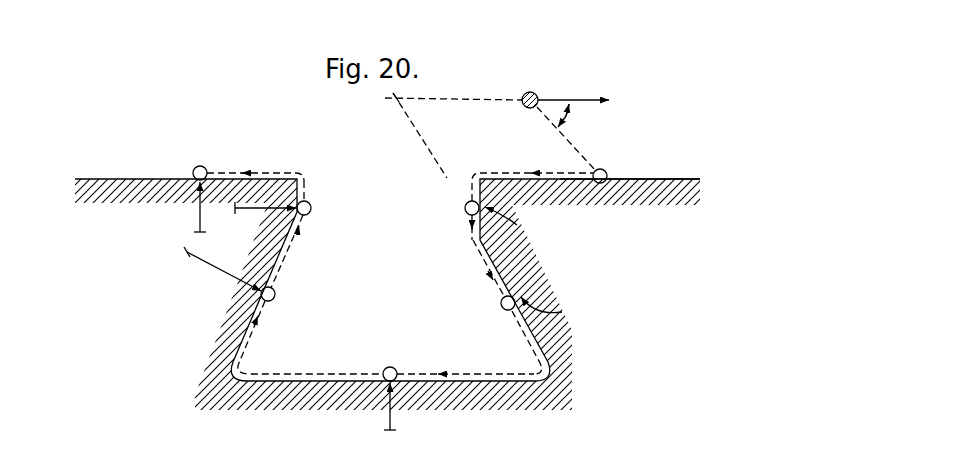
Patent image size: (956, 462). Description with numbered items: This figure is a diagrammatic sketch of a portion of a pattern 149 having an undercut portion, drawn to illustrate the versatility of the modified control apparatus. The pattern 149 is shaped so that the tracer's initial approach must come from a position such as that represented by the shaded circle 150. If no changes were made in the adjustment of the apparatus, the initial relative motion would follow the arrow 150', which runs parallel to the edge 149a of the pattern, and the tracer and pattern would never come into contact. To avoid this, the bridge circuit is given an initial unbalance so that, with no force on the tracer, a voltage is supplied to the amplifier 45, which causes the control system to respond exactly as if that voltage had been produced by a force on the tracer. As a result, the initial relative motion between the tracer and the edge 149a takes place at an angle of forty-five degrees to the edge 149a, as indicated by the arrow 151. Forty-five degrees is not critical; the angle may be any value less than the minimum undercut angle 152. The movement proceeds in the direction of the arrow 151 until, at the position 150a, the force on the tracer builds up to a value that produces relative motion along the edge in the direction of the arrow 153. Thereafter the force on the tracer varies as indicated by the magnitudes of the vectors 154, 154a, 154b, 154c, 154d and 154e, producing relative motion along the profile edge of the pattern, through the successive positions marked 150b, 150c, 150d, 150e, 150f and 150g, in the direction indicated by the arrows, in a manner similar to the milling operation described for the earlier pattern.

The pattern 149 is at (606, 278).
The edge of the pattern 149a is at (621, 179).
The shaded circle 150 is at (529, 93).
The arrow 150' is at (588, 88).
The position 150a is at (607, 168).
The particle at slot corner position 150b is at (468, 213).
The particle on right slot wall 150c is at (498, 293).
The particle path along slot bottom 150d is at (462, 379).
The particle path along left slot wall 150e is at (242, 328).
The particle at left wall top position 150f is at (306, 190).
The particle final position on left surface 150g is at (271, 176).
The arrow 151 is at (569, 141).
The minimum undercut angle 152 is at (450, 102).
The arrow 153 is at (531, 171).
The vector 154 is at (513, 220).
The vector 154a is at (558, 309).
The vector 154b is at (391, 421).
The vector 154c is at (207, 265).
The vector 154d is at (257, 211).
The vector 154e is at (200, 221).
The amplifier 45 is at (576, 116).